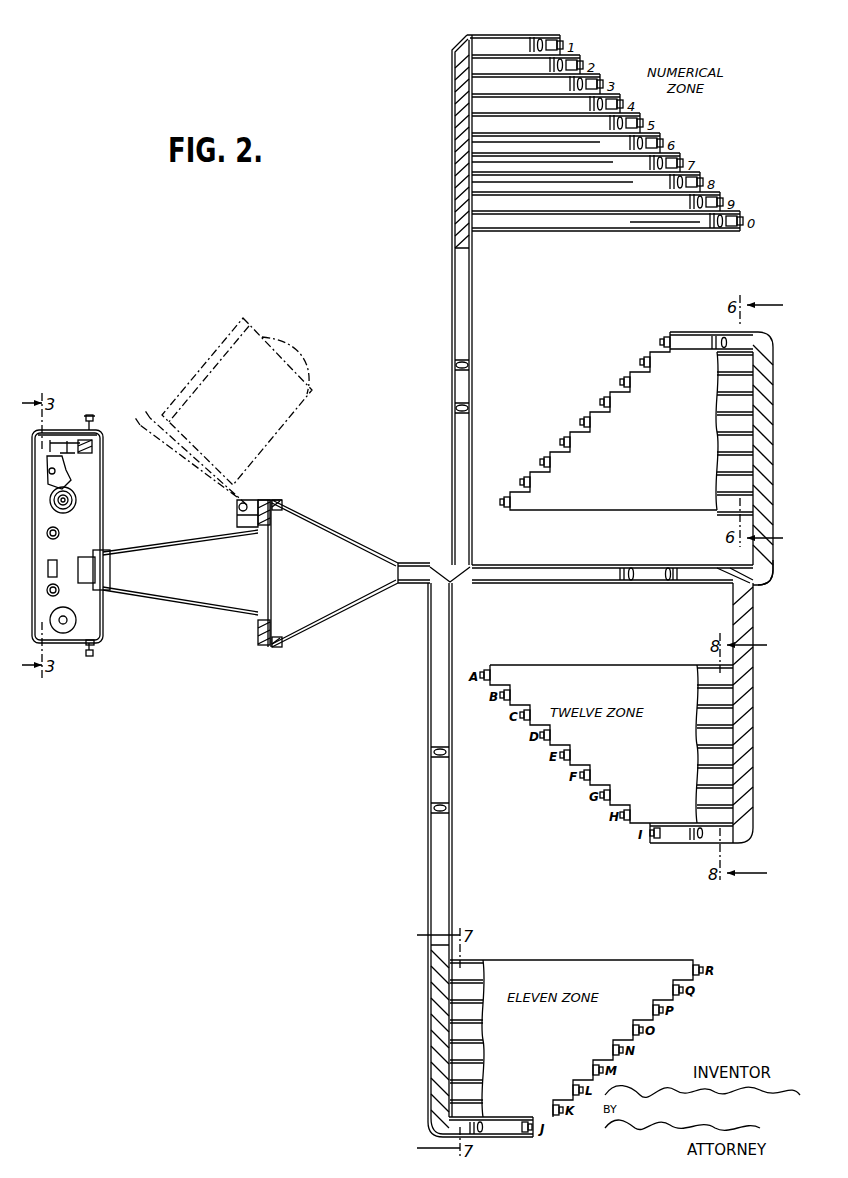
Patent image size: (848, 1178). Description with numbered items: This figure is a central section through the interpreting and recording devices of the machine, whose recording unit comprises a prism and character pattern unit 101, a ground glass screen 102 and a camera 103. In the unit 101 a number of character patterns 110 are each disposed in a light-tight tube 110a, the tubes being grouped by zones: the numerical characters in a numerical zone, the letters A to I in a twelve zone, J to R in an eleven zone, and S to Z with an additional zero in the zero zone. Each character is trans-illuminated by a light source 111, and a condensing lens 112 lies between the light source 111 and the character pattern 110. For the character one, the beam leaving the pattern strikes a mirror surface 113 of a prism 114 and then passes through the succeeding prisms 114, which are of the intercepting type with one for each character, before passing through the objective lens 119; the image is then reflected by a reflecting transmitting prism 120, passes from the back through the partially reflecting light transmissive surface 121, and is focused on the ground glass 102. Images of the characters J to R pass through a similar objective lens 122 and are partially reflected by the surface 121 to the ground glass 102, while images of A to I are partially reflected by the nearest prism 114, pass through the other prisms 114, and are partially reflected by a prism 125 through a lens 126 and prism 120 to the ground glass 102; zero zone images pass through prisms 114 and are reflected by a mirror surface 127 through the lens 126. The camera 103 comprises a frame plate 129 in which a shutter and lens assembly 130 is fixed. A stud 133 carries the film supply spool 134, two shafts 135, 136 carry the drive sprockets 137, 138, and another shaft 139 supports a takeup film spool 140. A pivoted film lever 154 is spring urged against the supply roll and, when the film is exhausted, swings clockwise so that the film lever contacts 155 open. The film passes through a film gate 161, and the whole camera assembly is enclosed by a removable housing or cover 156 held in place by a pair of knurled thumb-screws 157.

The prism and character pattern unit 101 is at (622, 413).
The ground glass screen 102 is at (272, 597).
The camera 103 is at (70, 646).
The character patterns 110 is at (472, 182).
The light-tight tube 110a is at (638, 234).
The light source 111 is at (535, 40).
The condensing lens 112 is at (531, 53).
The mirror surface 113 is at (462, 42).
The prism 114 is at (457, 50).
The objective lens 119 is at (472, 392).
The reflecting transmitting prism 120 is at (463, 583).
The partially reflecting light transmissive surface 121 is at (430, 587).
The objective lens 122 is at (440, 788).
The prism 125 is at (737, 583).
The lens 126 is at (648, 578).
The mirror surface 127 is at (770, 573).
The frame plate 129 is at (92, 448).
The shutter and lens assembly 130 is at (103, 571).
The stud 133 is at (70, 496).
The film supply spool 134 is at (75, 501).
The shaft 135 is at (58, 530).
The shaft 136 is at (60, 592).
The drive sprocket 137 is at (98, 553).
The drive sprocket 138 is at (72, 610).
The shaft 139 is at (67, 623).
The takeup film spool 140 is at (92, 645).
The pivoted film lever 154 is at (62, 468).
The film lever contacts 155 is at (67, 440).
The removable housing or cover 156 is at (58, 432).
The knurled thumb-screws 157 is at (92, 418).
The film gate 161 is at (58, 562).